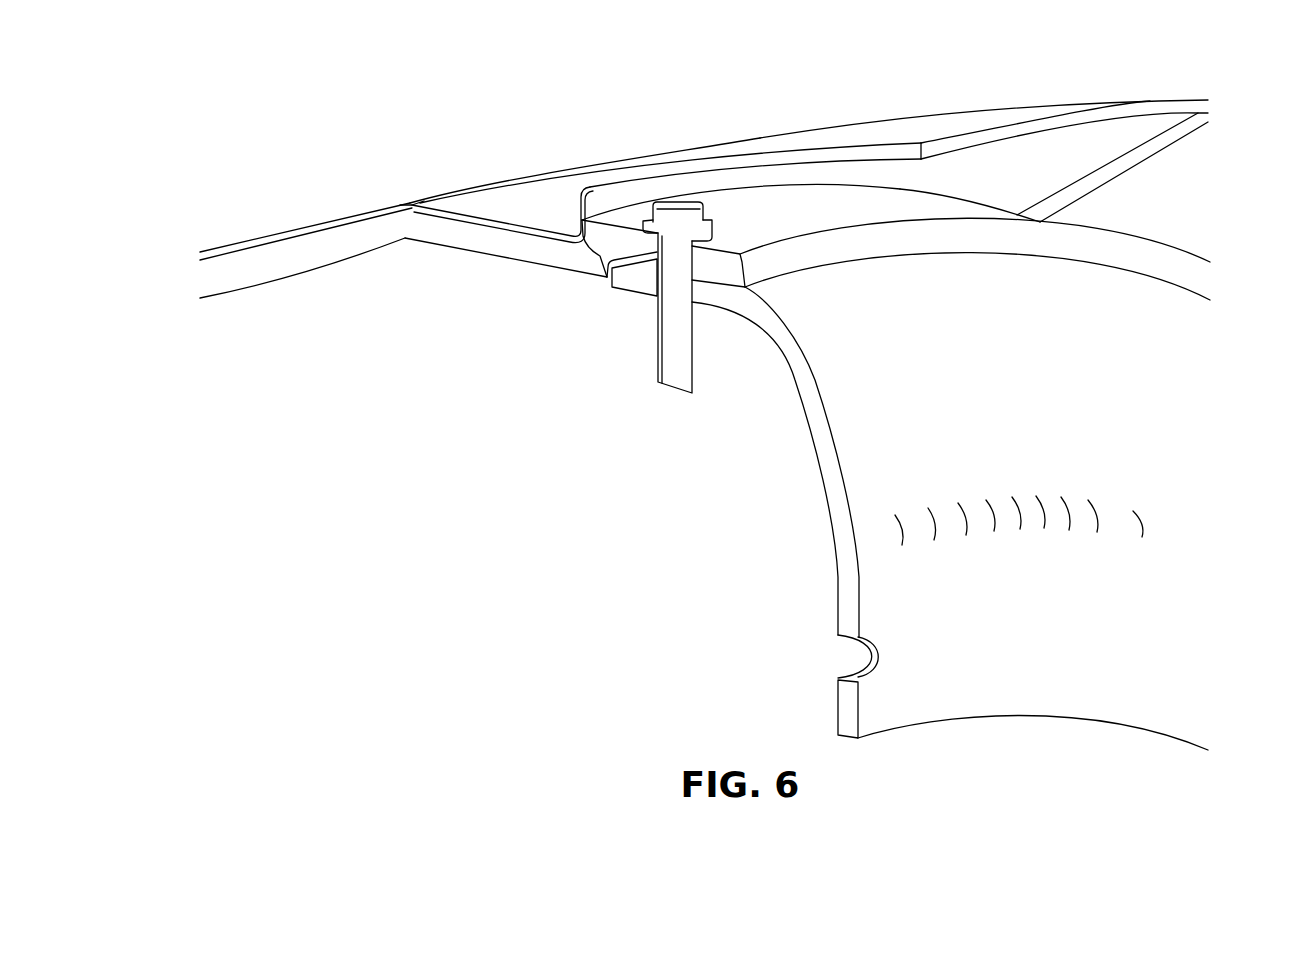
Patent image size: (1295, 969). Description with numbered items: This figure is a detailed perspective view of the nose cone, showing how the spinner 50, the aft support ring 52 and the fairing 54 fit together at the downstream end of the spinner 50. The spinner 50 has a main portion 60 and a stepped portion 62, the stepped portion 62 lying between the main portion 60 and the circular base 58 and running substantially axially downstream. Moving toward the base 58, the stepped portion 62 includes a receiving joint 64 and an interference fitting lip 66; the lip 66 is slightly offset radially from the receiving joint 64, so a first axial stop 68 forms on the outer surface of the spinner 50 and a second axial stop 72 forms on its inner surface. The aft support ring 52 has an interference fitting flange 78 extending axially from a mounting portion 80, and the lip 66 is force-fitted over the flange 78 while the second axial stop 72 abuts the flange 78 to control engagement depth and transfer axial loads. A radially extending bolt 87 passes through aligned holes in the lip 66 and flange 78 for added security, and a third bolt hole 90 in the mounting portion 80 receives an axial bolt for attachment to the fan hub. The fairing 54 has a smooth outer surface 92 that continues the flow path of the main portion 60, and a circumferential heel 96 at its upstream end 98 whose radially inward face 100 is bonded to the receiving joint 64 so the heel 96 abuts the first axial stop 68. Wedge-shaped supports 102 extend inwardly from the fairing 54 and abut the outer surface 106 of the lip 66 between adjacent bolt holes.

The spinner 50 is at (265, 255).
The aft support ring 52 is at (1020, 396).
The fairing 54 is at (875, 130).
The base 58 is at (968, 232).
The main portion 60 is at (330, 215).
The stepped portion 62 is at (488, 282).
The receiving joint 64 is at (540, 252).
The interference fitting lip 66 is at (770, 200).
The first axial stop 68 is at (603, 260).
The second axial stop 72 is at (610, 268).
The interference fitting flange 78 is at (637, 283).
The mounting portion 80 is at (1165, 418).
The bolt 87 is at (674, 203).
The third bolt hole 90 is at (863, 660).
The outer surface 92 is at (707, 140).
The circumferential heel 96 is at (517, 198).
The upstream end 98 is at (417, 200).
The face 100 is at (477, 213).
The wedge-shaped support 102 is at (1028, 175).
The outer surface 106 is at (920, 208).